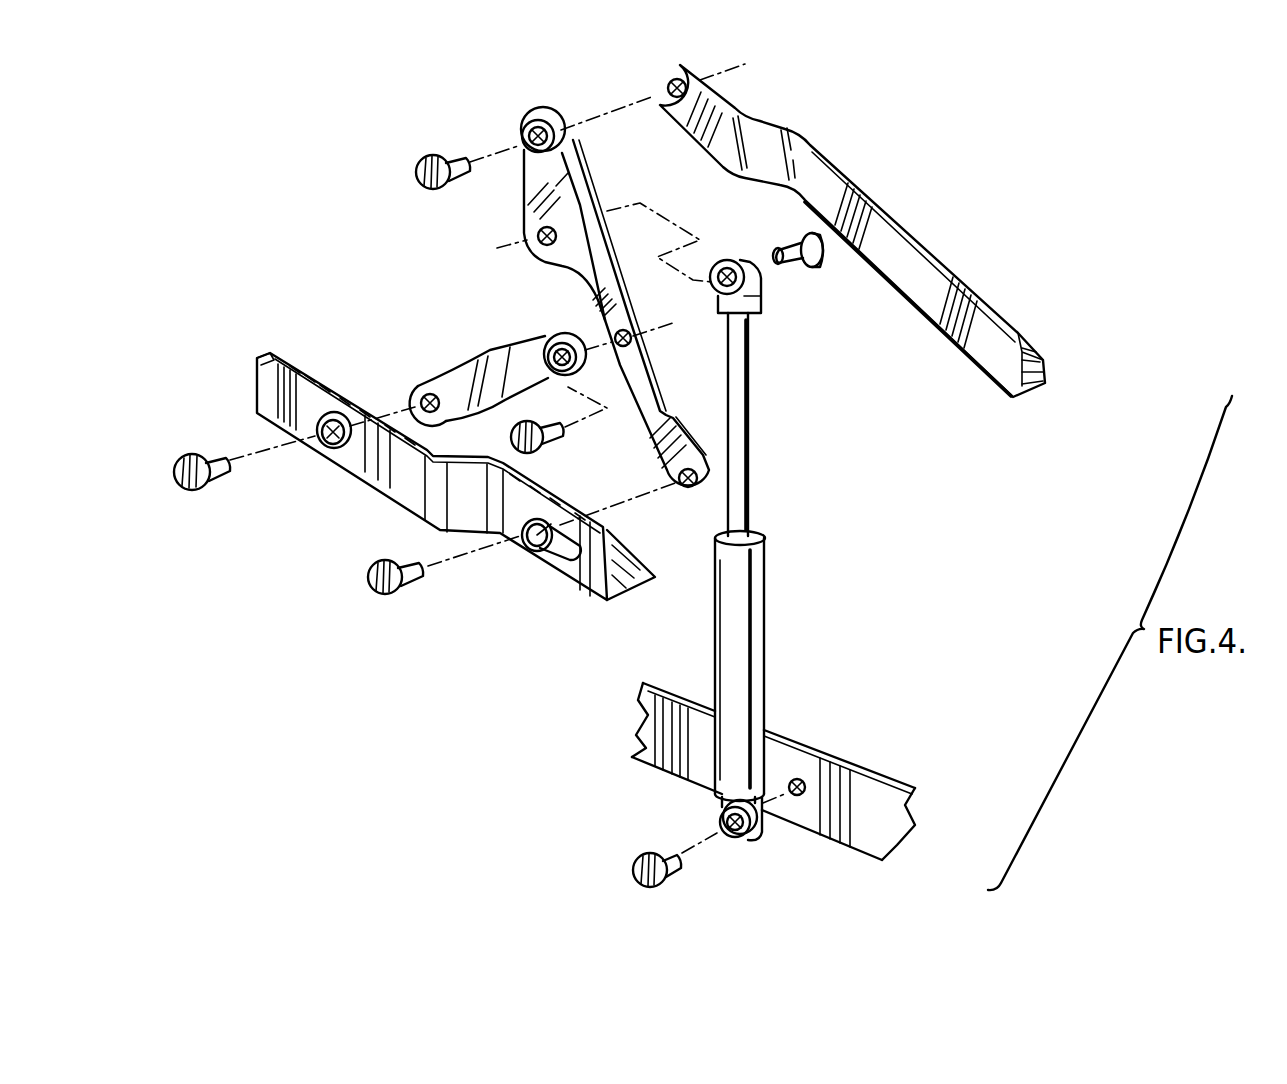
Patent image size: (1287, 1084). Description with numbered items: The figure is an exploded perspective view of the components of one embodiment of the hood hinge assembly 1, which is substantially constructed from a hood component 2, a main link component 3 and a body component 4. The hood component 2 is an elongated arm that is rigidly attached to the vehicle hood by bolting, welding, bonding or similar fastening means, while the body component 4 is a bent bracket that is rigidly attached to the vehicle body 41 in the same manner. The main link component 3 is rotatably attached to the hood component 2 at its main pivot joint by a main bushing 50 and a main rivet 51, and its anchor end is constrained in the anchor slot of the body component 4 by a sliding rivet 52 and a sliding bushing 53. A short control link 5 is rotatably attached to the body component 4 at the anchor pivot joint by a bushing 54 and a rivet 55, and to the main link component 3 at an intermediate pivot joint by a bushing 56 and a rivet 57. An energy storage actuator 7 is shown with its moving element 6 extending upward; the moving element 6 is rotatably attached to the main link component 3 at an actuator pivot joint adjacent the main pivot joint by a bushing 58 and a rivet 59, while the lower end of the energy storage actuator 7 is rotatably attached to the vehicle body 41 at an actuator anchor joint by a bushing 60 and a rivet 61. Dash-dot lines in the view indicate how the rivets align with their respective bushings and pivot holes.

The hood hinge assembly 1 is at (352, 657).
The hood component 2 is at (920, 267).
The main link component 3 is at (660, 353).
The body component 4 is at (594, 595).
The control link 5 is at (447, 380).
The moving element 6 is at (748, 440).
The energy storage actuator 7 is at (756, 637).
The vehicle body 41 is at (870, 788).
The main bushing 50 is at (525, 124).
The main rivet 51 is at (427, 178).
The sliding rivet 52 is at (382, 595).
The sliding bushing 53 is at (522, 552).
The bushing 54 is at (324, 457).
The rivet 55 is at (220, 476).
The bushing 56 is at (552, 345).
The rivet 57 is at (560, 436).
The bushing 58 is at (735, 296).
The rivet 59 is at (810, 270).
The bushing 60 is at (746, 838).
The rivet 61 is at (645, 870).